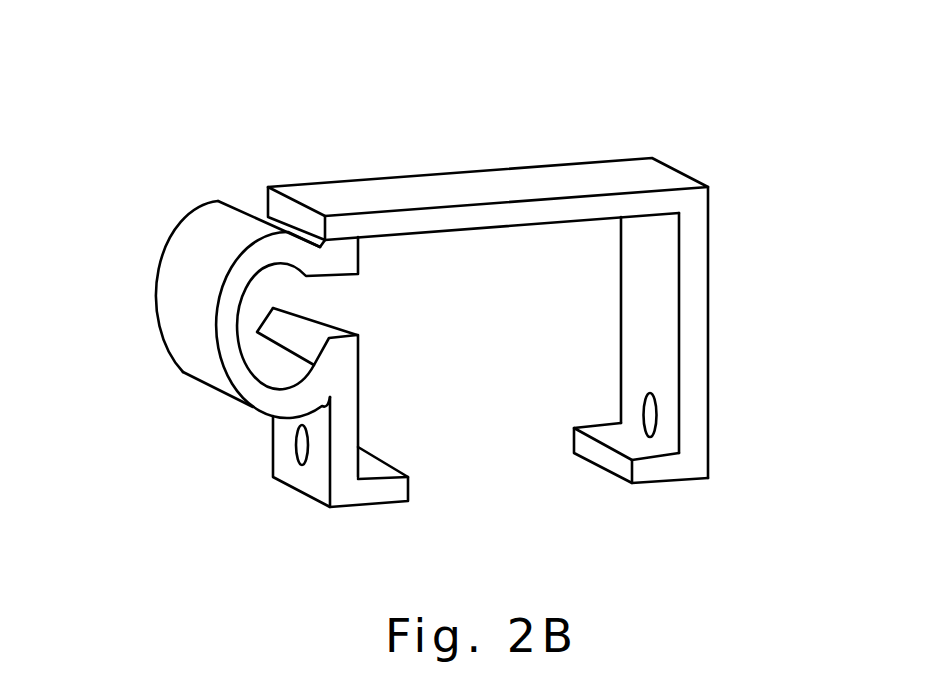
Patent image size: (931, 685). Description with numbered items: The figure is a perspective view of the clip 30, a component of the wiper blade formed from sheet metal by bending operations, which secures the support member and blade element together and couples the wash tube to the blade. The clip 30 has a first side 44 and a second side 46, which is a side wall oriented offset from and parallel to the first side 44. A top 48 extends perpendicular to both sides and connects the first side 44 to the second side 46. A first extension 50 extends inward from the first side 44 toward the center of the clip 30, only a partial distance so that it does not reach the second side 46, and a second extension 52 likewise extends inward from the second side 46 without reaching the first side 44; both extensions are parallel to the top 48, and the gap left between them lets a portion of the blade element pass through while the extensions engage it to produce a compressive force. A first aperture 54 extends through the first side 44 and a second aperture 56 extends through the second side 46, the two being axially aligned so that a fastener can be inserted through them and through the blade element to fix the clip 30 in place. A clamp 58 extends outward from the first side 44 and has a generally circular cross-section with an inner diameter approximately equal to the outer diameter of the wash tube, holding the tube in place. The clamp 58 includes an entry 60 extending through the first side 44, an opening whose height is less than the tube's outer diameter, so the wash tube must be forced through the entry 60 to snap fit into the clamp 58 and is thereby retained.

The clip 30 is at (643, 132).
The first side 44 is at (315, 477).
The second side 46 is at (693, 312).
The top 48 is at (438, 184).
The first extension 50 is at (383, 492).
The second extension 52 is at (660, 470).
The first aperture 54 is at (300, 443).
The second aperture 56 is at (650, 413).
The clamp 58 is at (190, 240).
The entry 60 is at (338, 290).